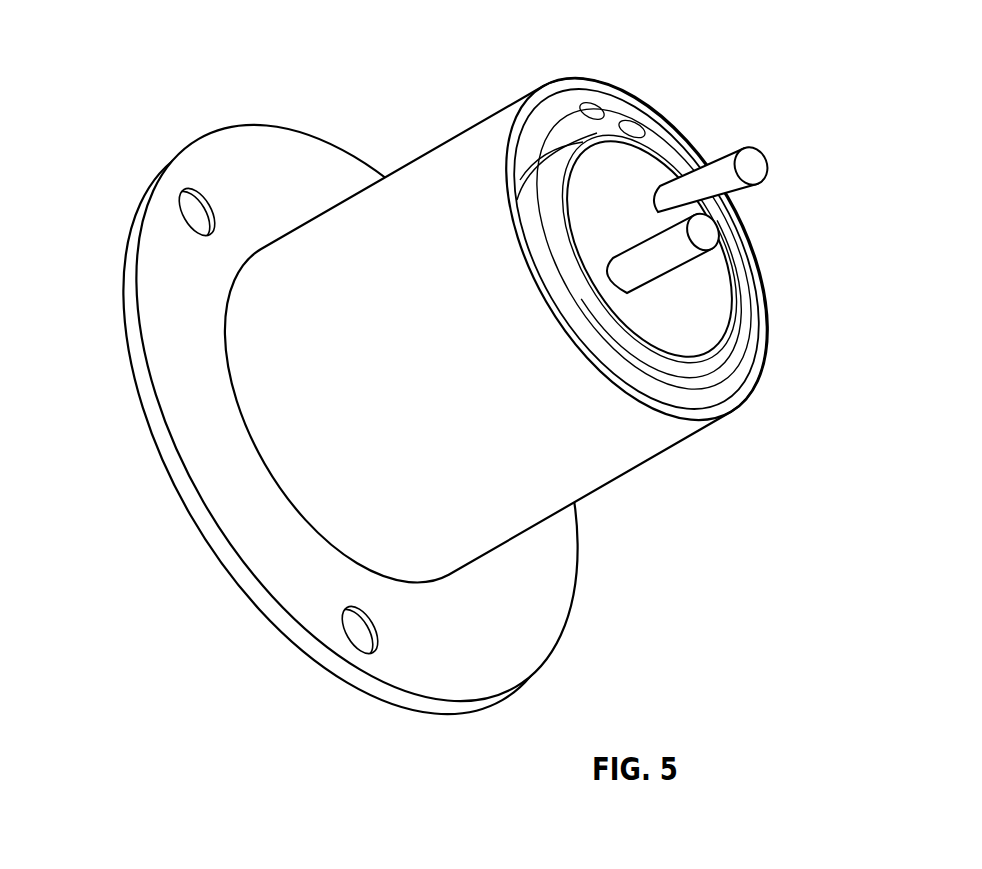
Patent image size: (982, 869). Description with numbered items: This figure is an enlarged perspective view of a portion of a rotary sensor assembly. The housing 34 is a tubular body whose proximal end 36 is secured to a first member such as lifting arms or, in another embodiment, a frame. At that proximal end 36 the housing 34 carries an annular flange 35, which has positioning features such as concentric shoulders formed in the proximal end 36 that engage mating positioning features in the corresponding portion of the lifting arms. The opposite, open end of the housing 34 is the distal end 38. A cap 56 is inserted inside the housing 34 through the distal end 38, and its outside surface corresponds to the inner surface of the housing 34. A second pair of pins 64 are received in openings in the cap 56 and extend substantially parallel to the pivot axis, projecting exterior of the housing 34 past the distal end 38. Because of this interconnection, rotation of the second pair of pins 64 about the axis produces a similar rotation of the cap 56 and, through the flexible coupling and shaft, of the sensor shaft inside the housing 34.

The housing 34 is at (449, 139).
The annular flange 35 is at (258, 123).
The proximal end 36 is at (118, 315).
The distal end 38 is at (594, 86).
The cap 56 is at (636, 209).
The second pair of pins 64 is at (718, 173).